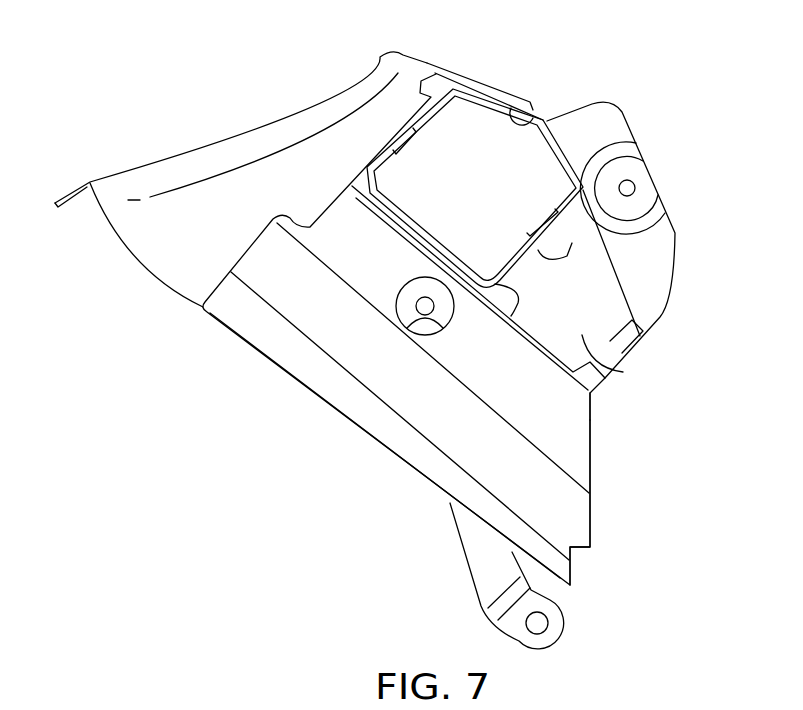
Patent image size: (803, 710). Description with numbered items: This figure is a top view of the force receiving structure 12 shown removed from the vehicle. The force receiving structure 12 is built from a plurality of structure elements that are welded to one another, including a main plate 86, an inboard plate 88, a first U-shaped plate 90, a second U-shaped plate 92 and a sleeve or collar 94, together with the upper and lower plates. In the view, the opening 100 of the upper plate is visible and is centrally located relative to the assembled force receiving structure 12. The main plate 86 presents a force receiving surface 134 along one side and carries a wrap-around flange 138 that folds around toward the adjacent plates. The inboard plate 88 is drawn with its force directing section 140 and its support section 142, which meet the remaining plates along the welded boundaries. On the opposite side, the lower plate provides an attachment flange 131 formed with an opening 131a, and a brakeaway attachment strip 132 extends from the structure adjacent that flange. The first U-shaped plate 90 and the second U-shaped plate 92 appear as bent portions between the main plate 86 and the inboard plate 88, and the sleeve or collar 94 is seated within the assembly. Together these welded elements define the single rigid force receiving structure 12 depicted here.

The force receiving structure 12 is at (558, 62).
The main plate 86 is at (168, 235).
The inboard plate 88 is at (660, 327).
The first U-shaped plate 90 is at (506, 108).
The second U-shaped plate 92 is at (433, 242).
The sleeve or collar 94 is at (454, 307).
The opening 100 is at (407, 330).
The attachment flange 131 is at (641, 112).
The opening 131a is at (636, 188).
The brakeaway attachment strip 132 is at (553, 628).
The force receiving surface 134 is at (152, 168).
The wrap-around flange 138 is at (477, 82).
The force directing section 140 is at (591, 470).
The support section 142 is at (596, 394).